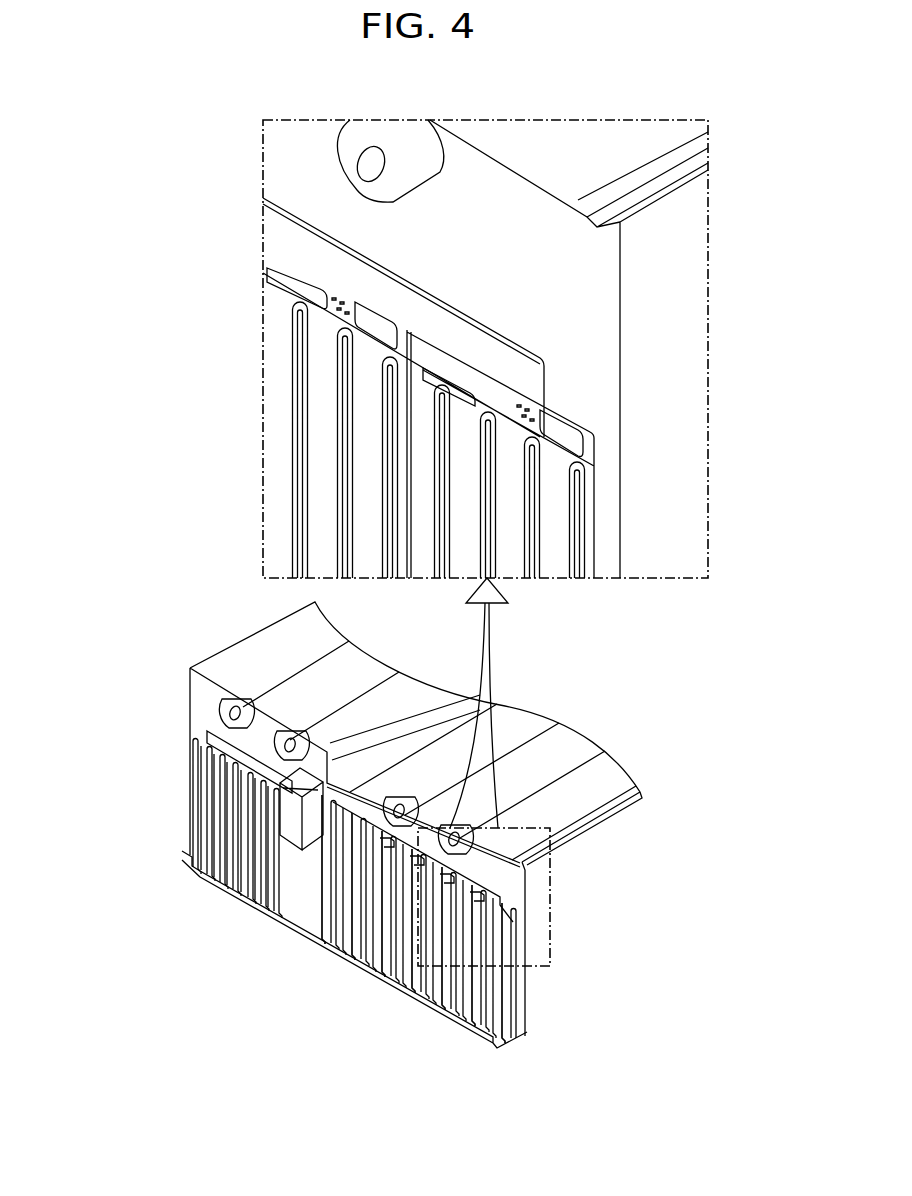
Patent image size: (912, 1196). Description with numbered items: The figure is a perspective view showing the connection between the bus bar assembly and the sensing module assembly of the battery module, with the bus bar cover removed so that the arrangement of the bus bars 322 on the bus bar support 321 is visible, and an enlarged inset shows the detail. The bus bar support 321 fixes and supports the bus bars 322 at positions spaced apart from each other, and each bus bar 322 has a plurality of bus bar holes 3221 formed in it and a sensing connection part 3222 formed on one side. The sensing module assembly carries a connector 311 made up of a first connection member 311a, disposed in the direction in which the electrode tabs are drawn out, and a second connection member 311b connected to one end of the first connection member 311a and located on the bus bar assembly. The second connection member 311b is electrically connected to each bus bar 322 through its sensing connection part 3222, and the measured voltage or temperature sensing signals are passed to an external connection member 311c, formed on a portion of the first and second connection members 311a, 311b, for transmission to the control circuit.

The connector 311 is at (90, 683).
The first connection member 311a is at (370, 737).
The second connection member 311b is at (307, 247).
The external connection member 311c is at (290, 824).
The bus bar support 321 is at (600, 302).
The bus bar 322 is at (598, 535).
The bus bar hole 3221 is at (578, 487).
The sensing connection part 3222 is at (570, 437).